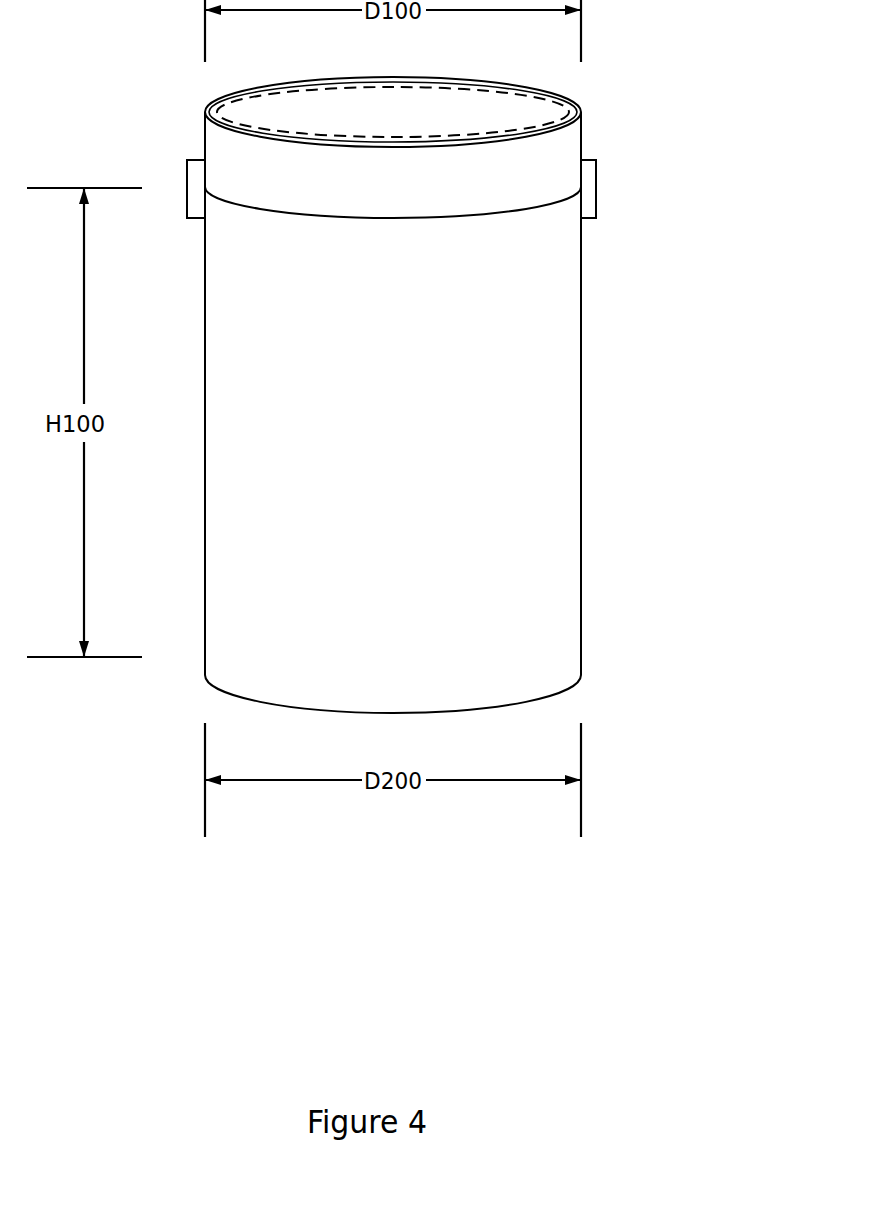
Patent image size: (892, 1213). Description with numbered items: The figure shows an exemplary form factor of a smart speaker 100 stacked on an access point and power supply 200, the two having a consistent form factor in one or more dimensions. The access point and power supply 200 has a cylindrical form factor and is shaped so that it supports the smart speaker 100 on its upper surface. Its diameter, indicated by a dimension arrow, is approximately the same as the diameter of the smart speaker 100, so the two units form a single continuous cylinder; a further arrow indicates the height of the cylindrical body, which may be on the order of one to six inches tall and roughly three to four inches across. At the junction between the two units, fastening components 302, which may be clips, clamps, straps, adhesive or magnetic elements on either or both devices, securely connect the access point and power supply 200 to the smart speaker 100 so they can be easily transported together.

The smart speaker 100 is at (393, 147).
The access point and power supply 200 is at (393, 450).
The fastening components 302 is at (161, 160).